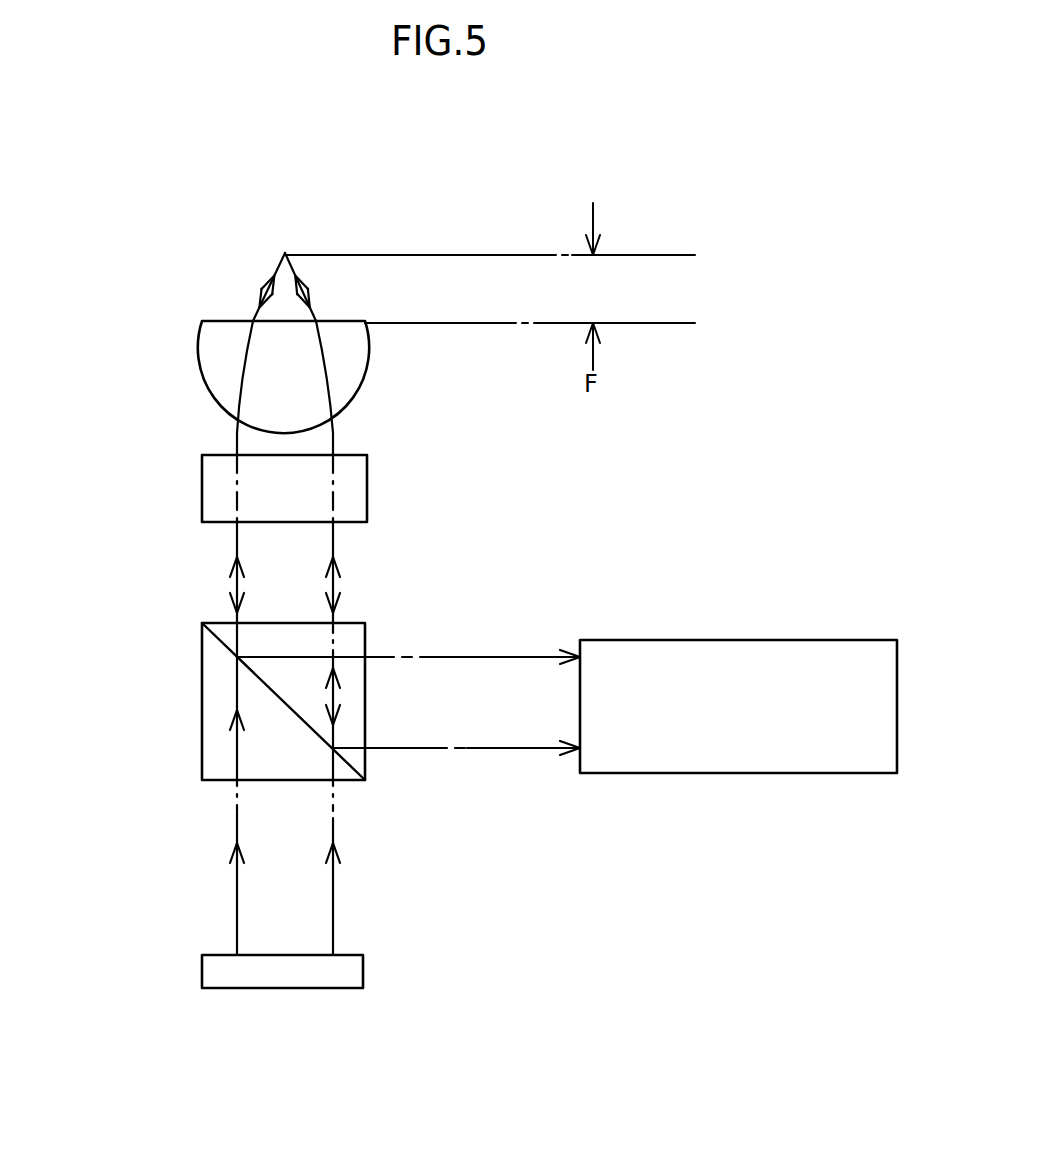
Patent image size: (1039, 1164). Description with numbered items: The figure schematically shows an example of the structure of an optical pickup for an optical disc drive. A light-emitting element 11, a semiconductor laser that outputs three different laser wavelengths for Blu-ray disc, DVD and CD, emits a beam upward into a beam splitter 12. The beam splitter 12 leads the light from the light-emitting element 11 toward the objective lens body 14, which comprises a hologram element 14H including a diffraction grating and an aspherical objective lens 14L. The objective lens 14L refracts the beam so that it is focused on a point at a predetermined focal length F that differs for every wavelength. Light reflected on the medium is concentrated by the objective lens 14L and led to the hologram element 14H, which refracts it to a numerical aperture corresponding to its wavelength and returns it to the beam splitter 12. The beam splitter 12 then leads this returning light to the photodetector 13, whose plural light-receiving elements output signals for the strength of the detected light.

The light-emitting element 11 is at (202, 972).
The beam splitter 12 is at (202, 702).
The photodetector 13 is at (684, 640).
The objective lens body 14 is at (80, 320).
The objective lens 14L is at (367, 366).
The hologram element 14H is at (367, 485).